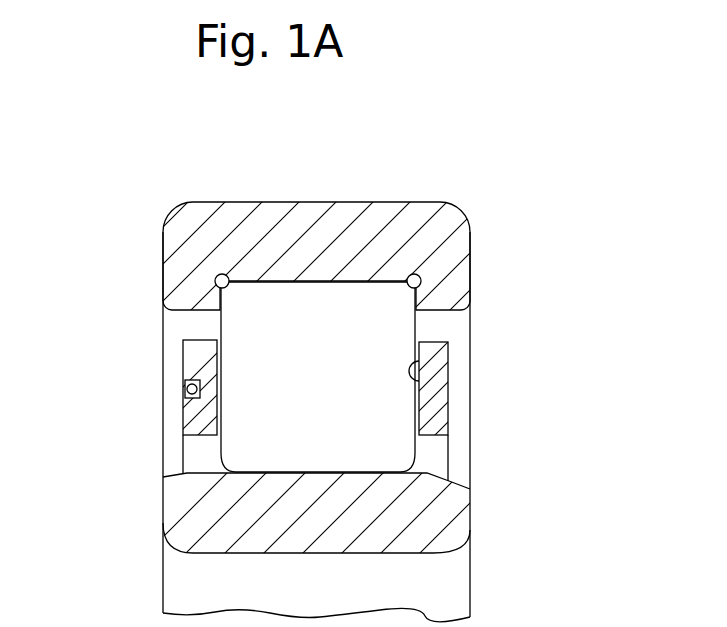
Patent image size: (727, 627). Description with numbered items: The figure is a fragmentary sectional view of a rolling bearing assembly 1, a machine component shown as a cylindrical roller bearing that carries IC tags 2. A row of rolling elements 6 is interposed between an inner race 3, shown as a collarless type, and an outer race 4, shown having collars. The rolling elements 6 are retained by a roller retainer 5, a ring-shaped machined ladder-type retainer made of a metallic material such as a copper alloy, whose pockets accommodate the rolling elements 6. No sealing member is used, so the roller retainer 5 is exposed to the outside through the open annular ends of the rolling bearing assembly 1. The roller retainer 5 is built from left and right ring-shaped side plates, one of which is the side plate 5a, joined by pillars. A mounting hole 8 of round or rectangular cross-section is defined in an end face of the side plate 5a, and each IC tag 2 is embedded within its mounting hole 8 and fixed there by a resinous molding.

The rolling bearing assembly 1 is at (343, 340).
The IC tag 2 is at (187, 393).
The inner race 3 is at (448, 505).
The outer race 4 is at (293, 215).
The roller retainer 5 is at (351, 383).
The side plate 5a is at (420, 362).
The rolling element 6 is at (400, 447).
The mounting hole 8 is at (183, 382).